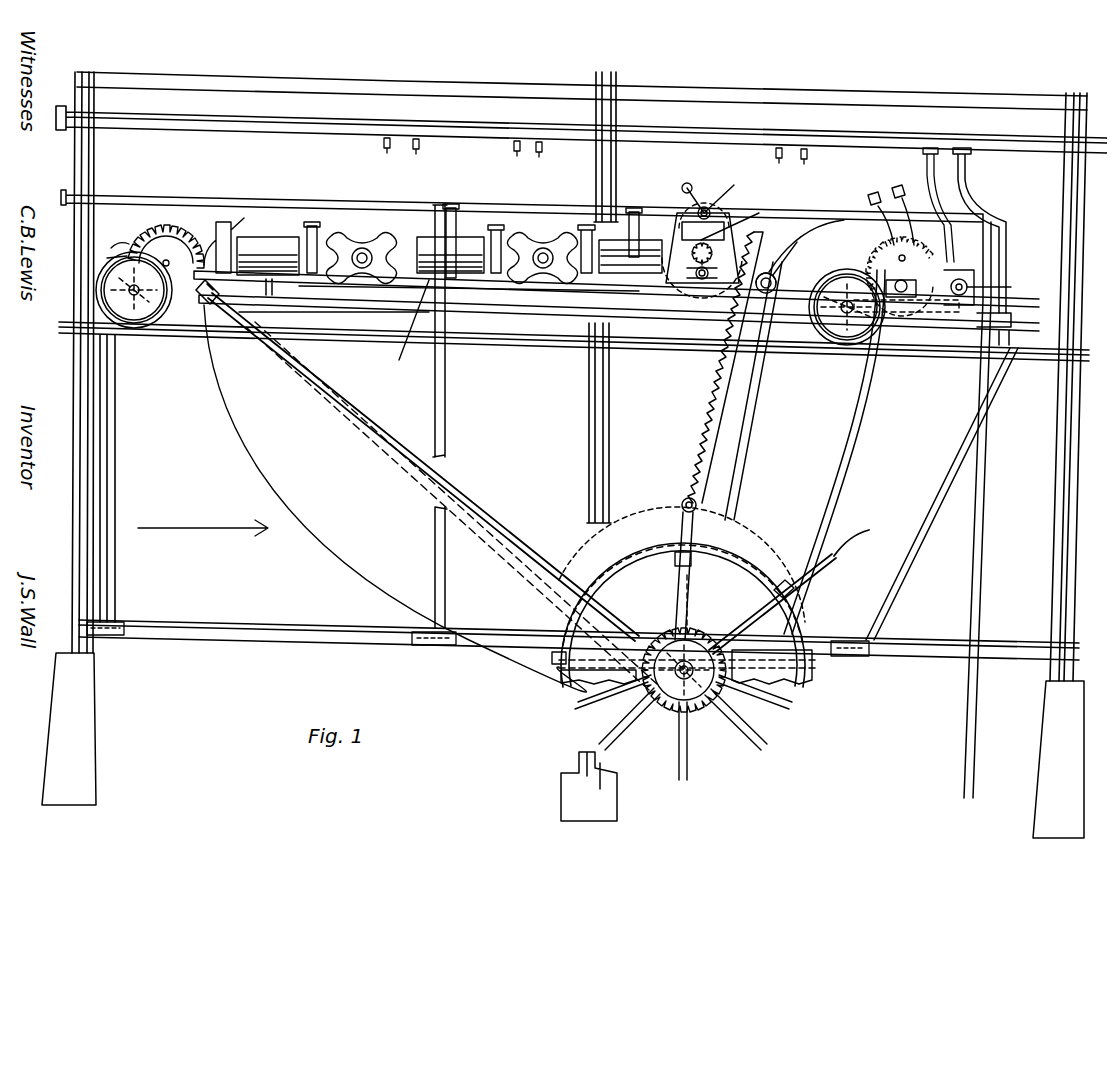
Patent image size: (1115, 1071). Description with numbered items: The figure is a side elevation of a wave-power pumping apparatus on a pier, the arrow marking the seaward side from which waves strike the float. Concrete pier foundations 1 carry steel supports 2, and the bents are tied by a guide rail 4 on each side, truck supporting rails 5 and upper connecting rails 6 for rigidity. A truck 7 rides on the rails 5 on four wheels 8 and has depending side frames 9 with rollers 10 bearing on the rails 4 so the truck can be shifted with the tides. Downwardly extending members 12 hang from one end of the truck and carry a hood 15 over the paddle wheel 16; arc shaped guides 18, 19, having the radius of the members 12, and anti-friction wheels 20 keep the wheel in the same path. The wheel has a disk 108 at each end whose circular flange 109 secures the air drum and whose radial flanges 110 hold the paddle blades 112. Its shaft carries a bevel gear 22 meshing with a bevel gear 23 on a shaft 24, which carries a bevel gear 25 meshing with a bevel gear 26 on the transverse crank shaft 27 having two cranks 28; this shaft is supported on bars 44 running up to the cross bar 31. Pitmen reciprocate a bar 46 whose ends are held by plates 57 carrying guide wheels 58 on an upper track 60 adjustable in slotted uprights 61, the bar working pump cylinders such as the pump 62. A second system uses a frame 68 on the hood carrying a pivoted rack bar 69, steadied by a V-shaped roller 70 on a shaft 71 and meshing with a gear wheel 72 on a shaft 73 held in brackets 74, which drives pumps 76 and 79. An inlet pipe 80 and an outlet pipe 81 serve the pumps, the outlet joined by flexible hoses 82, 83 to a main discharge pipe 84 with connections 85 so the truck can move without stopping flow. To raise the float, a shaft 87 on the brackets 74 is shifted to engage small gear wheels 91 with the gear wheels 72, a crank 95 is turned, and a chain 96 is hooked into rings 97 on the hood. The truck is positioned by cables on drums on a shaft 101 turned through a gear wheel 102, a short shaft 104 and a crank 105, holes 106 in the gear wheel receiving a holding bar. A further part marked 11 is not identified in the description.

The pier foundations 1 is at (84, 712).
The steel supports 2 is at (616, 90).
The guide rail 4 is at (324, 640).
The truck supporting rails 5 is at (358, 338).
The upper connecting rails 6 is at (272, 86).
The truck 7 is at (255, 280).
The wheels 8 is at (142, 320).
The depending side frames 9 is at (446, 388).
The rollers 10 is at (122, 640).
The gear wheel 11 is at (682, 680).
The downwardly extending members 12 is at (392, 476).
The hood 15 is at (818, 548).
The paddle wheel 16 is at (575, 708).
The arc shaped guide 18 is at (868, 400).
The arc shaped guide 19 is at (745, 392).
The anti-friction wheels 20 is at (556, 660).
The bevel gear 22 is at (770, 683).
The bevel gear 23 is at (690, 582).
The shaft 24 is at (478, 508).
The bevel gear 25 is at (205, 300).
The bevel gear 26 is at (126, 242).
The transverse crank shaft 27 is at (110, 249).
The cranks 28 is at (150, 240).
The cross bar 31 is at (232, 222).
The bars 44 is at (175, 232).
The bar 46 is at (362, 292).
The plates 57 is at (375, 252).
The guide wheels 58 is at (350, 240).
The upper track 60 is at (440, 246).
The slotted uprights 61 is at (310, 240).
The pump cylinder 62 is at (258, 240).
The frame 68 is at (718, 527).
The rack bar 69 is at (798, 240).
The roller 70 is at (778, 278).
The shaft 71 is at (806, 240).
The gear wheel 72 is at (760, 213).
The shaft 73 is at (698, 278).
The brackets 74 is at (682, 222).
The pump 76 is at (400, 355).
The pump 79 is at (655, 256).
The inlet pipe 80 is at (160, 206).
The outlet pipe 81 is at (320, 304).
The flexible hose 82 is at (978, 205).
The flexible hose 83 is at (870, 200).
The main discharge pipe 84 is at (876, 141).
The connections 85 is at (398, 160).
The shaft 87 is at (712, 212).
The small gear wheels 91 is at (712, 203).
The crank 95 is at (686, 183).
The chain 96 is at (760, 395).
The rings 97 is at (683, 507).
The shaft 101 is at (900, 314).
The gear wheel 102 is at (886, 262).
The short shaft 104 is at (1012, 287).
The crank 105 is at (968, 283).
The holes 106 is at (886, 282).
The disk 108 is at (575, 676).
The circular flange 109 is at (710, 700).
The radial flanges 110 is at (690, 770).
The paddle blades 112 is at (682, 785).